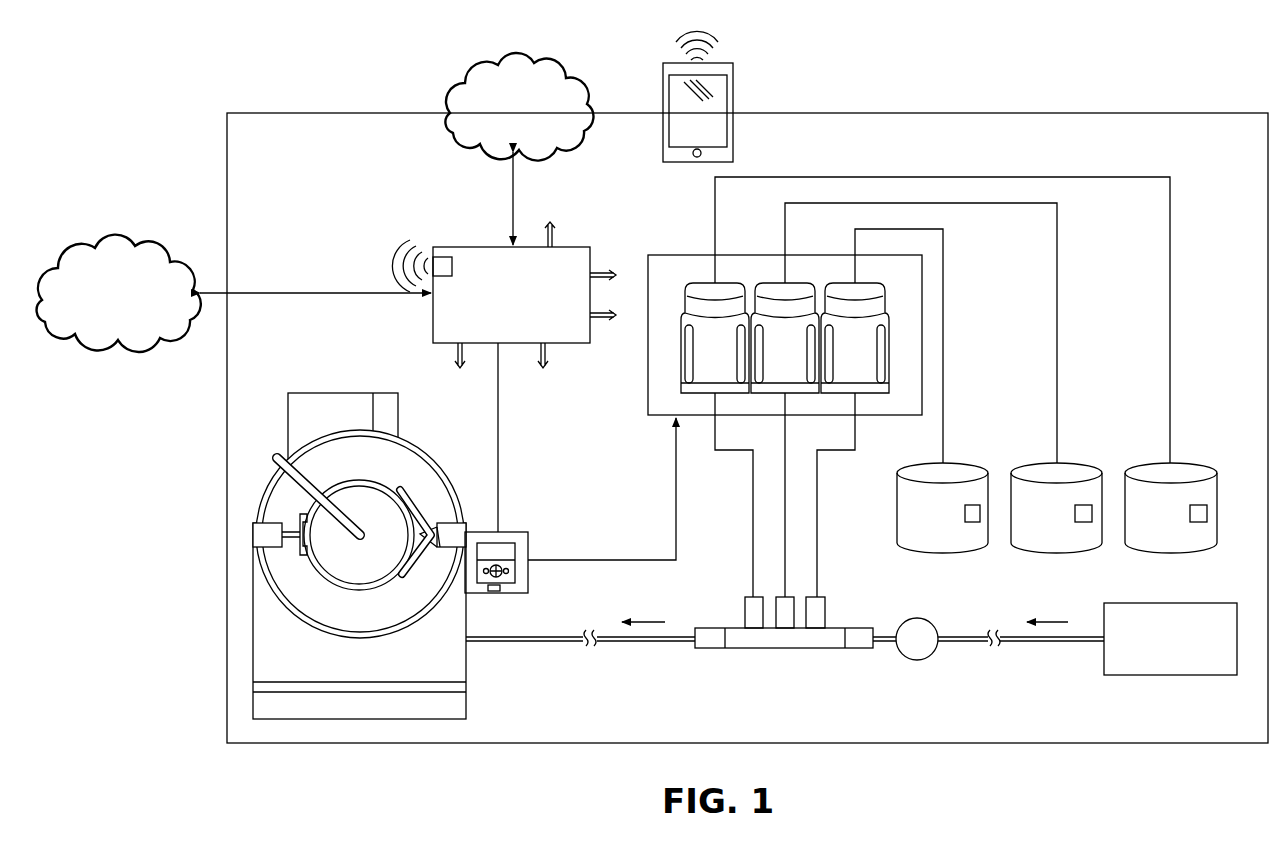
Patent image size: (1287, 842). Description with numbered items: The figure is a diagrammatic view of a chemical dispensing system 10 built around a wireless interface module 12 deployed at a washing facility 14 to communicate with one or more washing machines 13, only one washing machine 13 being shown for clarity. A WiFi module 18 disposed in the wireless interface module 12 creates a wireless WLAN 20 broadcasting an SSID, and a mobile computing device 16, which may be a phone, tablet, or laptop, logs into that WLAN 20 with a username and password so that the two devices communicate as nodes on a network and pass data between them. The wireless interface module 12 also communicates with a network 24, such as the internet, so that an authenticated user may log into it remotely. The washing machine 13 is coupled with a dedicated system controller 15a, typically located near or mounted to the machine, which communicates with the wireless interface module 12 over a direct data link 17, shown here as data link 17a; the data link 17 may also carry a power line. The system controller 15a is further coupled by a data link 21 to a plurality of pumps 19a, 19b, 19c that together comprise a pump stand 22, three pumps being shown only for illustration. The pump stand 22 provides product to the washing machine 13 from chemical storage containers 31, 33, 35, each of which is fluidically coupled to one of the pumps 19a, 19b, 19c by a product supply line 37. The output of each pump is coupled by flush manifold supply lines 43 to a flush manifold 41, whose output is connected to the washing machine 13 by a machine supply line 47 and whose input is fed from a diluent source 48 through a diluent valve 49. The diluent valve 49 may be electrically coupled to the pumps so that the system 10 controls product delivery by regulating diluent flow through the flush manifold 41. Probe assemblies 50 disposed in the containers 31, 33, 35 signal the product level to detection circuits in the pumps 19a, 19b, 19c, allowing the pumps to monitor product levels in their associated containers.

The chemical dispensing system 10 is at (206, 64).
The wireless interface module 12 is at (473, 247).
The washing machine 13 is at (466, 676).
The washing facility 14 is at (340, 201).
The system controller 15a is at (528, 540).
The mobile computing device 16 is at (733, 79).
The direct data link 17 is at (555, 230).
The data link 17a is at (499, 434).
The WiFi module 18 is at (440, 256).
The pump 19a is at (720, 346).
The pump 19b is at (790, 346).
The pump 19c is at (860, 346).
The wireless WLAN 20 is at (554, 80).
The data link 21 is at (676, 482).
The pump stand 22 is at (676, 255).
The network 24 is at (165, 258).
The chemical storage container 31 is at (939, 525).
The chemical storage container 33 is at (1053, 525).
The chemical storage container 35 is at (1167, 525).
The product supply line 37 is at (943, 375).
The flush manifold 41 is at (712, 628).
The flush manifold supply line 43 is at (817, 492).
The machine supply line 47 is at (558, 637).
The diluent source 48 is at (1208, 603).
The diluent valve 49 is at (916, 618).
The probe assembly 50 is at (973, 522).